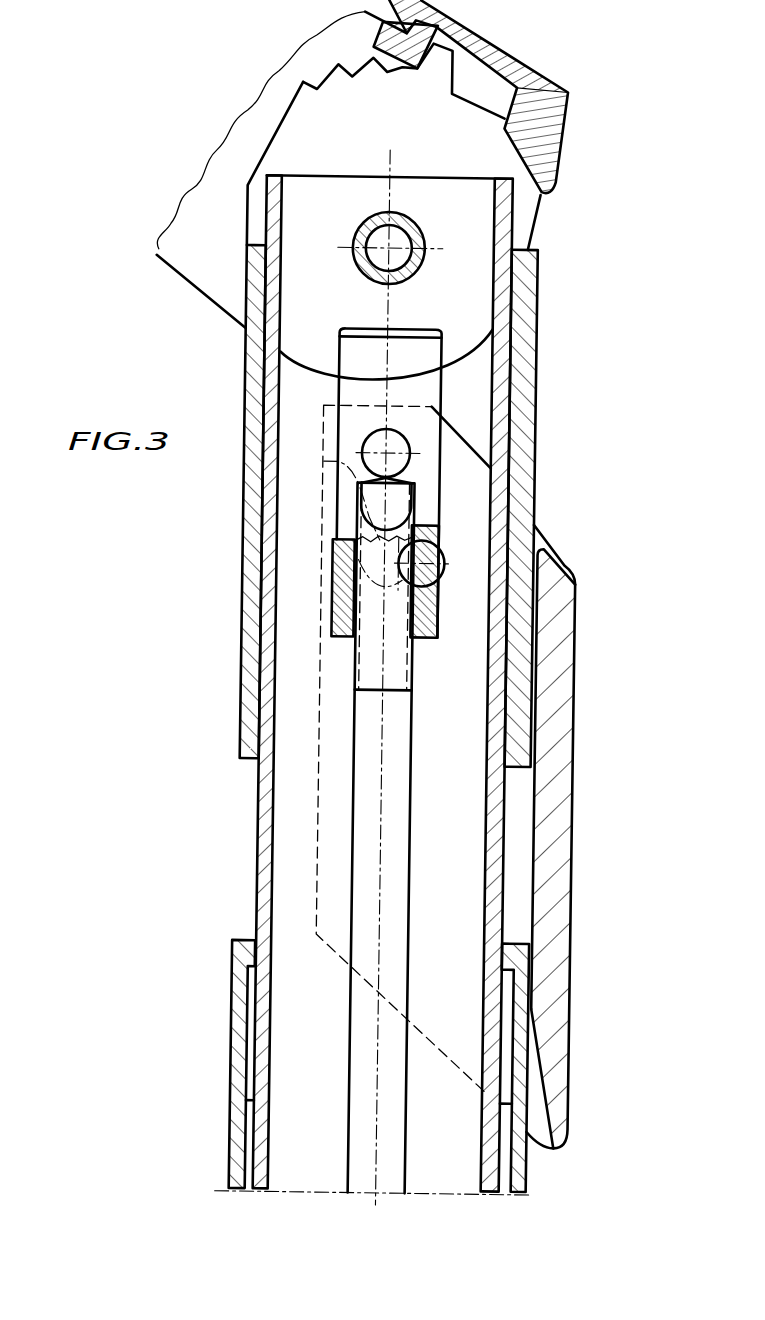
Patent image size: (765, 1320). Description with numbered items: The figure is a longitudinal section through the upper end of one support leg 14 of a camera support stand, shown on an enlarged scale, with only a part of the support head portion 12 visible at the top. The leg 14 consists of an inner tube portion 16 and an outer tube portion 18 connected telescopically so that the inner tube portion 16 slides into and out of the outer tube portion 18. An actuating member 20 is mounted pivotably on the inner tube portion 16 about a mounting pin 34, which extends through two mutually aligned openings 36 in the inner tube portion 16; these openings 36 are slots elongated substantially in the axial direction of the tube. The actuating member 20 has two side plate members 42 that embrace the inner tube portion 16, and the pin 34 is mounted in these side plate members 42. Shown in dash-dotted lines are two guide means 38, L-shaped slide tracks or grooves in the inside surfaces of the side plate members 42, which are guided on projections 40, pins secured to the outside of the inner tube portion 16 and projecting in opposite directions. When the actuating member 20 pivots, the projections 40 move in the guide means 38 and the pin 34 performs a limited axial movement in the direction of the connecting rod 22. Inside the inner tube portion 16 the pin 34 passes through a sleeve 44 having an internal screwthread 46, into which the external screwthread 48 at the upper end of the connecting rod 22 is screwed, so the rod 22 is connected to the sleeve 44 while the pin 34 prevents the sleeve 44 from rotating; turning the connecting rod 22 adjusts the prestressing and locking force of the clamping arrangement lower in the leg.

The support head portion 12 is at (531, 52).
The support leg 14 is at (242, 859).
The inner tube portion 16 is at (493, 783).
The outer tube portion 18 is at (229, 1126).
The actuating member 20 is at (548, 861).
The connecting rod 22 is at (396, 877).
The mounting pin 34 is at (403, 443).
The openings 36 is at (440, 477).
The guide means 38 is at (336, 542).
The projections 40 is at (440, 568).
The side plate members 42 is at (453, 991).
The sleeve 44 is at (427, 390).
The internal screwthread 46 is at (362, 522).
The external screwthread 48 is at (371, 659).